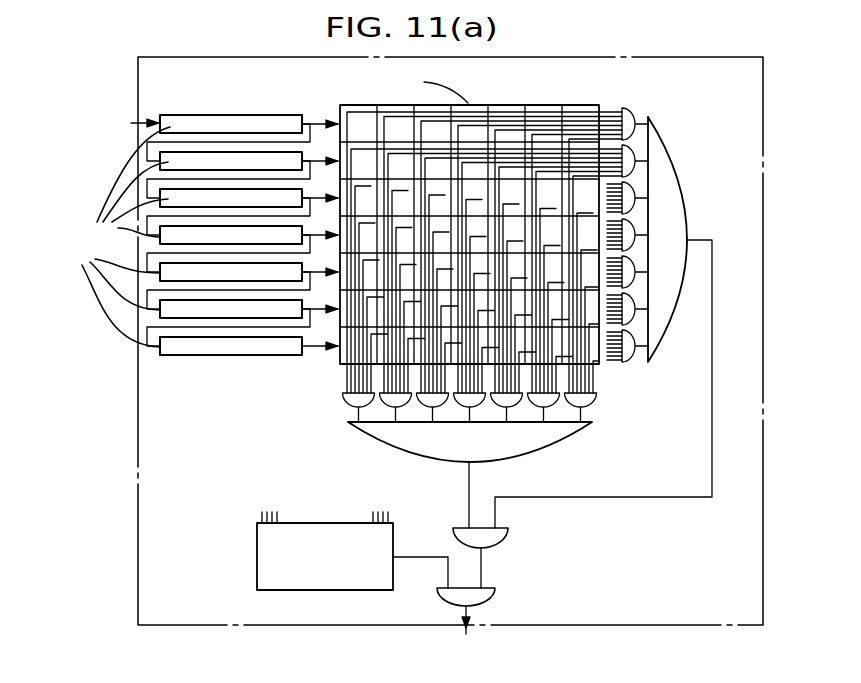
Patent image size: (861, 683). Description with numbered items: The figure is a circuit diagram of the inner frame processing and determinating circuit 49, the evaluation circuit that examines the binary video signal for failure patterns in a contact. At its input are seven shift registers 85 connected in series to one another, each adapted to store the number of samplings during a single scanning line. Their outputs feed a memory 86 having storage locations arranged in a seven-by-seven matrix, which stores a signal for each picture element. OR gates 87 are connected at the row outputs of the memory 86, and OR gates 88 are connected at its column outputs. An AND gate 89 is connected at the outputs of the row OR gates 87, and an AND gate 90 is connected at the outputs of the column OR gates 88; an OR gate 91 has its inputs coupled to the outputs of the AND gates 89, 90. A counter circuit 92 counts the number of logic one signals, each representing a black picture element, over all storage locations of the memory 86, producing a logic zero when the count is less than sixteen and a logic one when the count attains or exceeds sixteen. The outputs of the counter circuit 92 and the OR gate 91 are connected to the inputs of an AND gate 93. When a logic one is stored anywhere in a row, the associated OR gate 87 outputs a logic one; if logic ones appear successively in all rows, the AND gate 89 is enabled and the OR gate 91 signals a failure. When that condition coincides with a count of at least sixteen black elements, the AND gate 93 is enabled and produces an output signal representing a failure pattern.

The processing and determinating circuit 49 is at (680, 57).
The shift registers 85 is at (216, 353).
The memory 86 is at (512, 104).
The OR gates 87 is at (629, 108).
The OR gates 88 is at (344, 394).
The AND gate 89 is at (677, 170).
The AND gate 90 is at (367, 428).
The OR gate 91 is at (510, 536).
The counter circuit 92 is at (334, 590).
The AND gate 93 is at (490, 598).